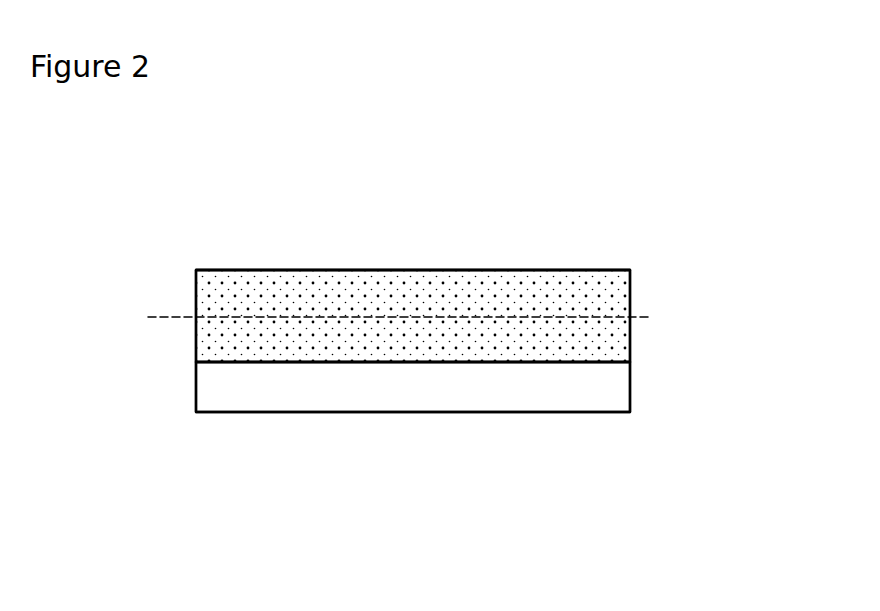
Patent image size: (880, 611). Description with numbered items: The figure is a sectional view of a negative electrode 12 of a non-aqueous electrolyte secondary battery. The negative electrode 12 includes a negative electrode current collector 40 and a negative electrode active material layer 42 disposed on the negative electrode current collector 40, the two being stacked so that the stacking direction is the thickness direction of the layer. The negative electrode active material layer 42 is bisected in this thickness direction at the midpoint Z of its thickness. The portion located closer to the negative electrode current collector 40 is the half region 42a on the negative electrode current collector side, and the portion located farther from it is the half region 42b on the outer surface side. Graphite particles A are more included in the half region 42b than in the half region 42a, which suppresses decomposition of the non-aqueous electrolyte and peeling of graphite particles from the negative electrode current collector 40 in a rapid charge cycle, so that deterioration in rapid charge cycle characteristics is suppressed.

The negative electrode 12 is at (647, 193).
The negative electrode current collector 40 is at (195, 385).
The negative electrode active material layer 42 is at (735, 242).
The half region on the negative electrode current collector side 42a is at (630, 345).
The half region on the outer surface side 42b is at (630, 295).
The midpoint of the thickness Z is at (177, 313).